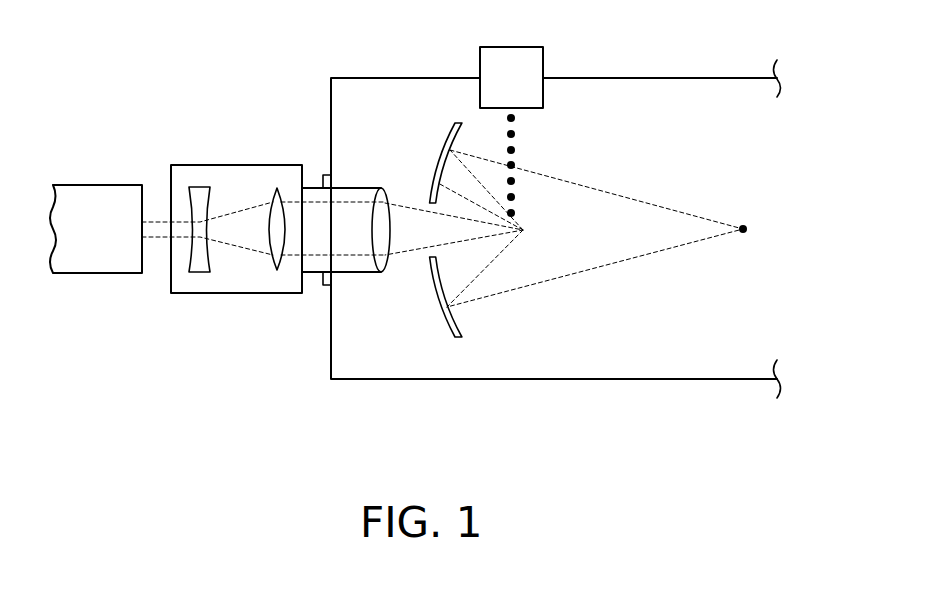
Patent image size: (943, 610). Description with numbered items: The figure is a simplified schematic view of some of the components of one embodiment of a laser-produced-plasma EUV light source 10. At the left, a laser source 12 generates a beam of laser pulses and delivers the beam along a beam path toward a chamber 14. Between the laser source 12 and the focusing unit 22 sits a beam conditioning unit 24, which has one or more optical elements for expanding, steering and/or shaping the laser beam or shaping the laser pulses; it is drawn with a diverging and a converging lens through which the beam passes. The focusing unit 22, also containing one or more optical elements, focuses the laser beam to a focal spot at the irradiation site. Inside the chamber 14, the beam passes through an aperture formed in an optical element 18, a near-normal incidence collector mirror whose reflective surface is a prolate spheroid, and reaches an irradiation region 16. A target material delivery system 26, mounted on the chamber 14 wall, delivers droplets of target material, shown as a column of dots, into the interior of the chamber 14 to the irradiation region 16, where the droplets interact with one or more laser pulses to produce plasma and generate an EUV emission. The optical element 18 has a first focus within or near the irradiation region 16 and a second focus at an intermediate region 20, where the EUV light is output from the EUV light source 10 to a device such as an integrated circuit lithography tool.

The EUV light source 10 is at (238, 95).
The laser source 12 is at (111, 234).
The chamber 14 is at (628, 352).
The irradiation region 16 is at (525, 230).
The optical element 18 is at (440, 302).
The intermediate region 20 is at (744, 233).
The focusing unit 22 is at (387, 193).
The beam conditioning unit 24 is at (235, 293).
The target material delivery system 26 is at (524, 89).